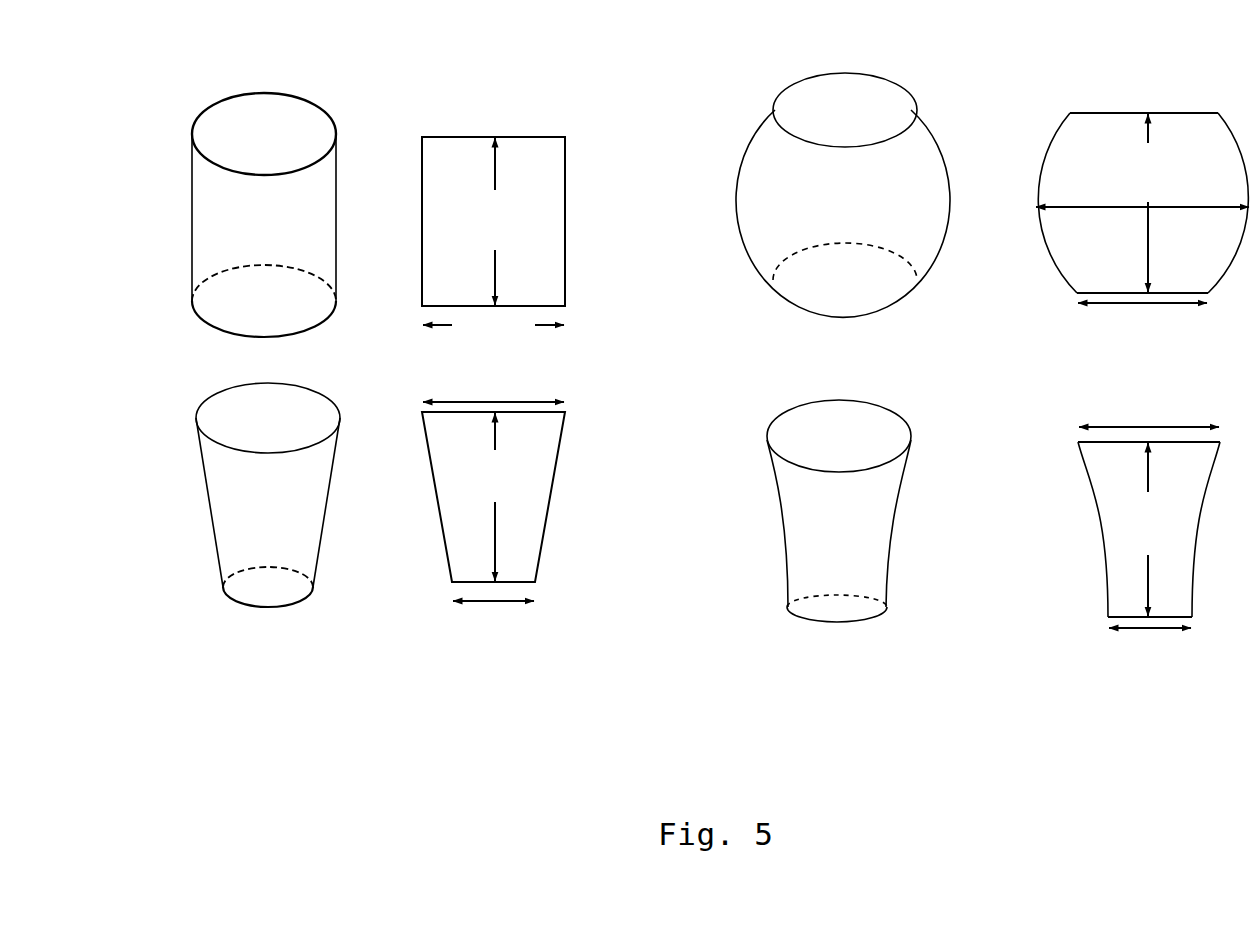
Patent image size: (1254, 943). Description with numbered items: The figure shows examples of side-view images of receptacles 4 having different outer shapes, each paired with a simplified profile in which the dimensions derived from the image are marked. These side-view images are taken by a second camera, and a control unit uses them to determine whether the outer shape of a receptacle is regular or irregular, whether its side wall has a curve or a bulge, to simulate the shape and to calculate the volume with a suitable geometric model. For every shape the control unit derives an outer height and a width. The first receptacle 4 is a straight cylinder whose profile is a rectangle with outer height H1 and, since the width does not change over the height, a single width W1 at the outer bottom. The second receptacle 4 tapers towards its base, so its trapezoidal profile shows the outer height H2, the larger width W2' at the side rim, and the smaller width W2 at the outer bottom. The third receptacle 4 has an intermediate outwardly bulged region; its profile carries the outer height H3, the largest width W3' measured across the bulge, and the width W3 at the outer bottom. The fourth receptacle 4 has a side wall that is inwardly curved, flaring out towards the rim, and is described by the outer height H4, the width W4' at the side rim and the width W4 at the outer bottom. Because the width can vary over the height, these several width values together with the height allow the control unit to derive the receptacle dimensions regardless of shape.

The receptacle 4 is at (300, 115).
The outer height H1 is at (497, 221).
The width at the outer bottom W1 is at (493, 333).
The outer height H2 is at (492, 497).
The width at the side rim W2' is at (493, 390).
The width at the outer bottom W2 is at (493, 613).
The outer height H3 is at (1152, 203).
The largest width W3' is at (1142, 194).
The width at the outer bottom W3 is at (1142, 315).
The outer height H4 is at (1140, 529).
The width at the side rim W4' is at (1149, 415).
The width at the outer bottom W4 is at (1150, 640).